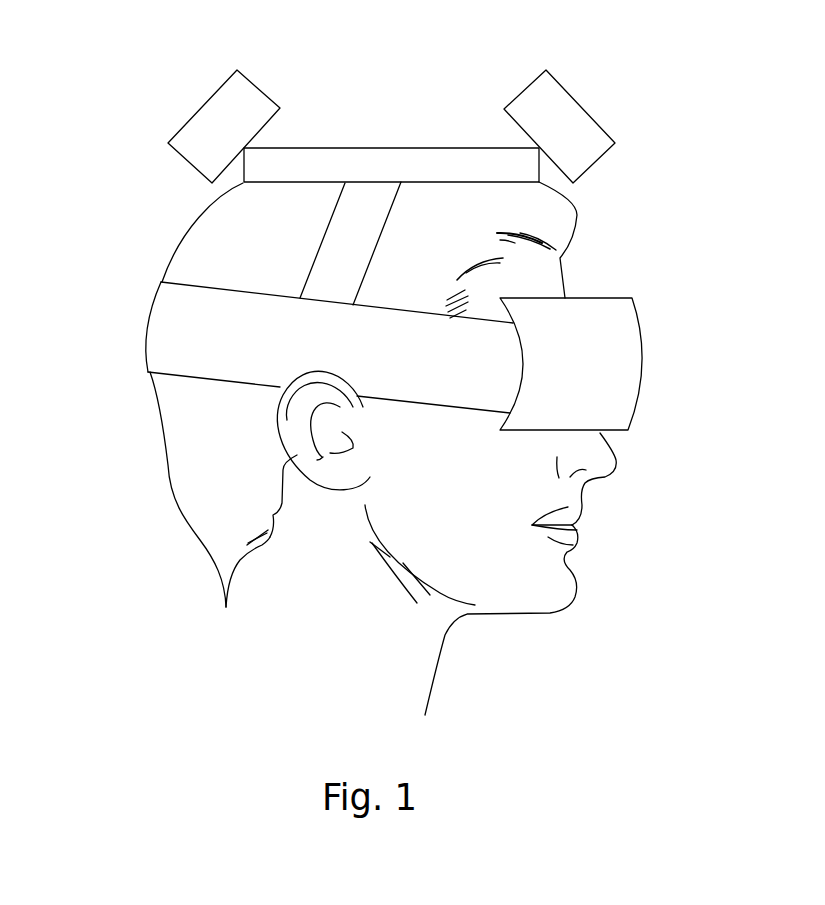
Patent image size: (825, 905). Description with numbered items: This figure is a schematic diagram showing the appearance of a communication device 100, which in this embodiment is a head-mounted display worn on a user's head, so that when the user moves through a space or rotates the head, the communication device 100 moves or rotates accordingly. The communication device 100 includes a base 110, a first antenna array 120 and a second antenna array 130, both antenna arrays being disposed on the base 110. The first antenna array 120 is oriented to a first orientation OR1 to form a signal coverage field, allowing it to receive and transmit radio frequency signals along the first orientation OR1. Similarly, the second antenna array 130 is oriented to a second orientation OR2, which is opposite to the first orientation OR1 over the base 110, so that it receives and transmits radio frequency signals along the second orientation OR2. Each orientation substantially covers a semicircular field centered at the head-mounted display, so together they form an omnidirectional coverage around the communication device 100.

The communication device 100 is at (464, 228).
The base 110 is at (392, 155).
The first antenna array 120 is at (523, 102).
The second antenna array 130 is at (260, 103).
The first orientation OR1 is at (590, 98).
The second orientation OR2 is at (195, 98).